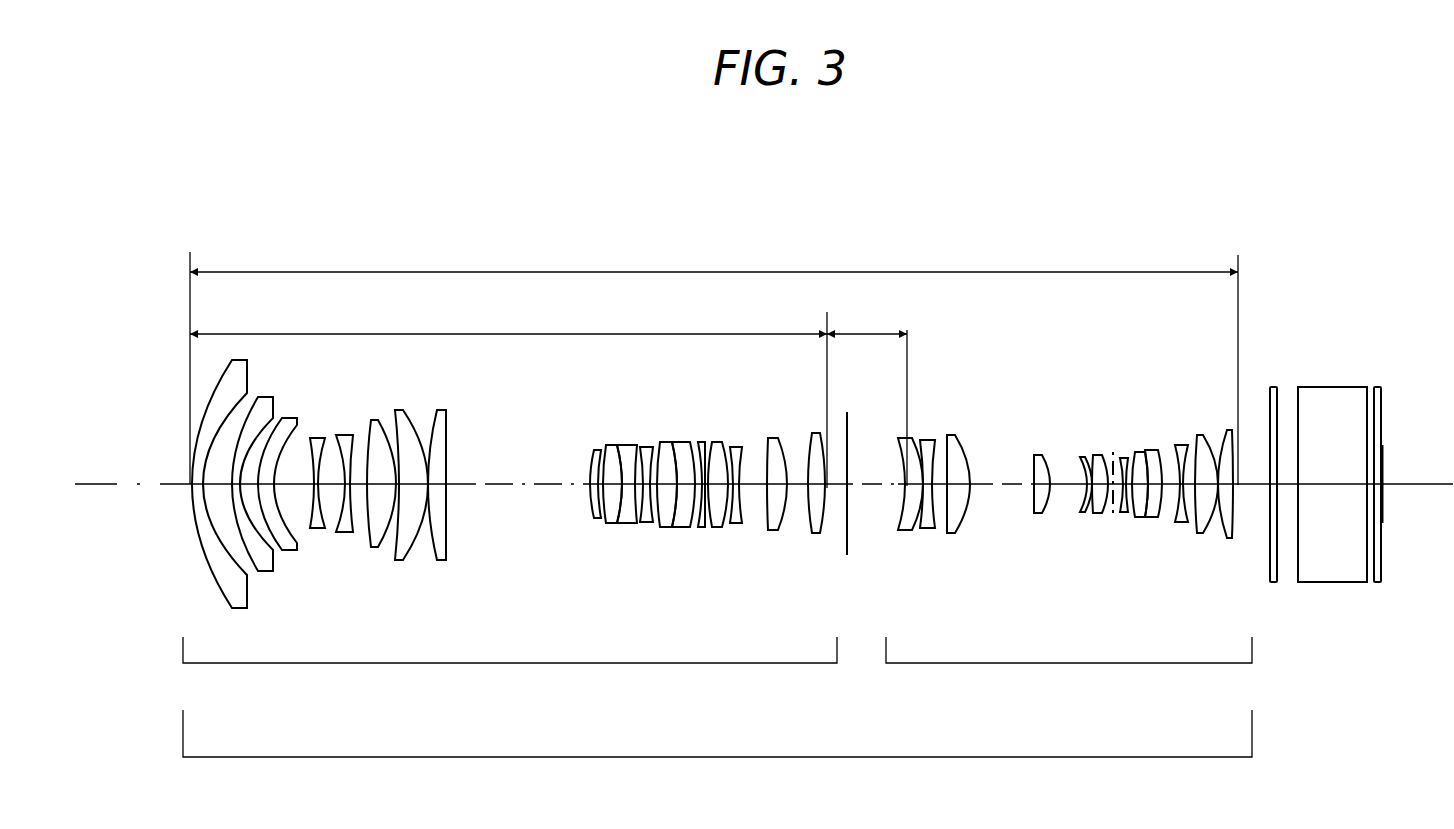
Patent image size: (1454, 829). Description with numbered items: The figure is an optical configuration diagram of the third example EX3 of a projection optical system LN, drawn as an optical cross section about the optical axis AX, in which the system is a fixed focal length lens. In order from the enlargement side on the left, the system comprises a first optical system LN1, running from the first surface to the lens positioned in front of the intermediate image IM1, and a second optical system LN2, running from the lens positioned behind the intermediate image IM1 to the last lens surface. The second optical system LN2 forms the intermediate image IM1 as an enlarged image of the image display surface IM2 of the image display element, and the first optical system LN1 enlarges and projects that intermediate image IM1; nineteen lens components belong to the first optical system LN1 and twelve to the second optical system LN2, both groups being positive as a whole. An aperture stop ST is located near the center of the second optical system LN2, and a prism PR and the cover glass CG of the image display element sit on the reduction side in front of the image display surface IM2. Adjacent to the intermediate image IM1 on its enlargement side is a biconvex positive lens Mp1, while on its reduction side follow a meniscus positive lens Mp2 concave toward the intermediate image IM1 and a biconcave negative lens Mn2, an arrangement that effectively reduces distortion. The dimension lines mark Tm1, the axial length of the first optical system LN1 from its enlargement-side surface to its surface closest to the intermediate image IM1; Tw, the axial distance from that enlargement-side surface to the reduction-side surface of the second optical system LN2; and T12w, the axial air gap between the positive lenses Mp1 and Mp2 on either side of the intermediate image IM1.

The optical axis AX is at (93, 485).
The zoom lens system of Example 3 EX3 is at (748, 190).
The projection optical system LN is at (717, 753).
The first optical system LN1 is at (510, 668).
The second optical system LN2 is at (1069, 668).
The positive lens Mp1 is at (815, 535).
The positive lens Mp2 is at (902, 535).
The negative lens Mn2 is at (929, 535).
The intermediate image IM1 is at (847, 407).
The image display surface IM2 is at (1383, 443).
The aperture stop ST is at (1113, 445).
The prism PR is at (1348, 493).
The cover glass CG is at (1378, 587).
The axial distance Tw is at (714, 357).
The axial distance Tm1 is at (508, 395).
The axial air-gap T12w is at (863, 332).